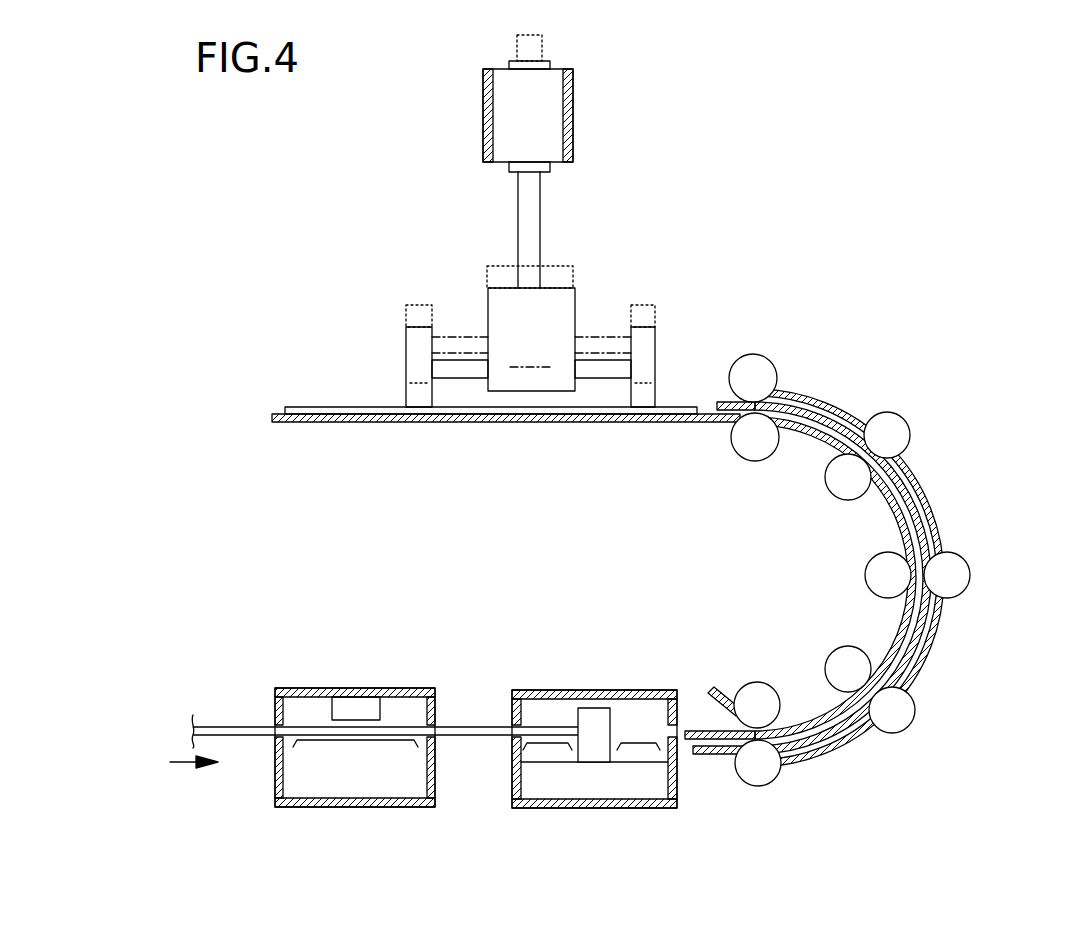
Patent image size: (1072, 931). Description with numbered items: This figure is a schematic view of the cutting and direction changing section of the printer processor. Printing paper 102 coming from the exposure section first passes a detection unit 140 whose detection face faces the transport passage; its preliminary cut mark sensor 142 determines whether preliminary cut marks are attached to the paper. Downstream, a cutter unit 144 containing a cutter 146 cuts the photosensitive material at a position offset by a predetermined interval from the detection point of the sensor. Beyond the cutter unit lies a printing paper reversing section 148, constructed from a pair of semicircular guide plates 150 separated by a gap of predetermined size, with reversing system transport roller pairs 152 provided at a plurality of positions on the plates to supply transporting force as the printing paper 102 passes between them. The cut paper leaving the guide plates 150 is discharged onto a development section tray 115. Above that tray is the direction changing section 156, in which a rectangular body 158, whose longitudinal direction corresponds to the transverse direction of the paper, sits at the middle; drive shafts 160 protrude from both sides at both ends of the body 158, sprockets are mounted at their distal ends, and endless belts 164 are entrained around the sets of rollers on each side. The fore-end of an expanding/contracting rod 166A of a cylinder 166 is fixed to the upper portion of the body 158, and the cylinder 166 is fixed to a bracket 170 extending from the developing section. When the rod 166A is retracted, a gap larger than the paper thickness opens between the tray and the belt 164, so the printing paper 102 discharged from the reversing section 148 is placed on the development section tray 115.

The printing paper 102 is at (357, 407).
The development section tray 115 is at (317, 409).
The detection unit 140 is at (355, 761).
The preliminary cut mark sensor 142 is at (357, 708).
The cutter unit 144 is at (594, 763).
The cutter 146 is at (598, 718).
The printing paper reversing section 148 is at (823, 763).
The guide plates 150 is at (912, 625).
The reversing system transport roller pairs 152 is at (788, 357).
The direction changing section 156 is at (625, 231).
The body 158 is at (575, 305).
The drive shafts 160 is at (470, 372).
The endless belts 164 is at (413, 345).
The cylinder 166 is at (558, 105).
The expanding/contracting rod 166A is at (533, 203).
The bracket 170 is at (575, 80).